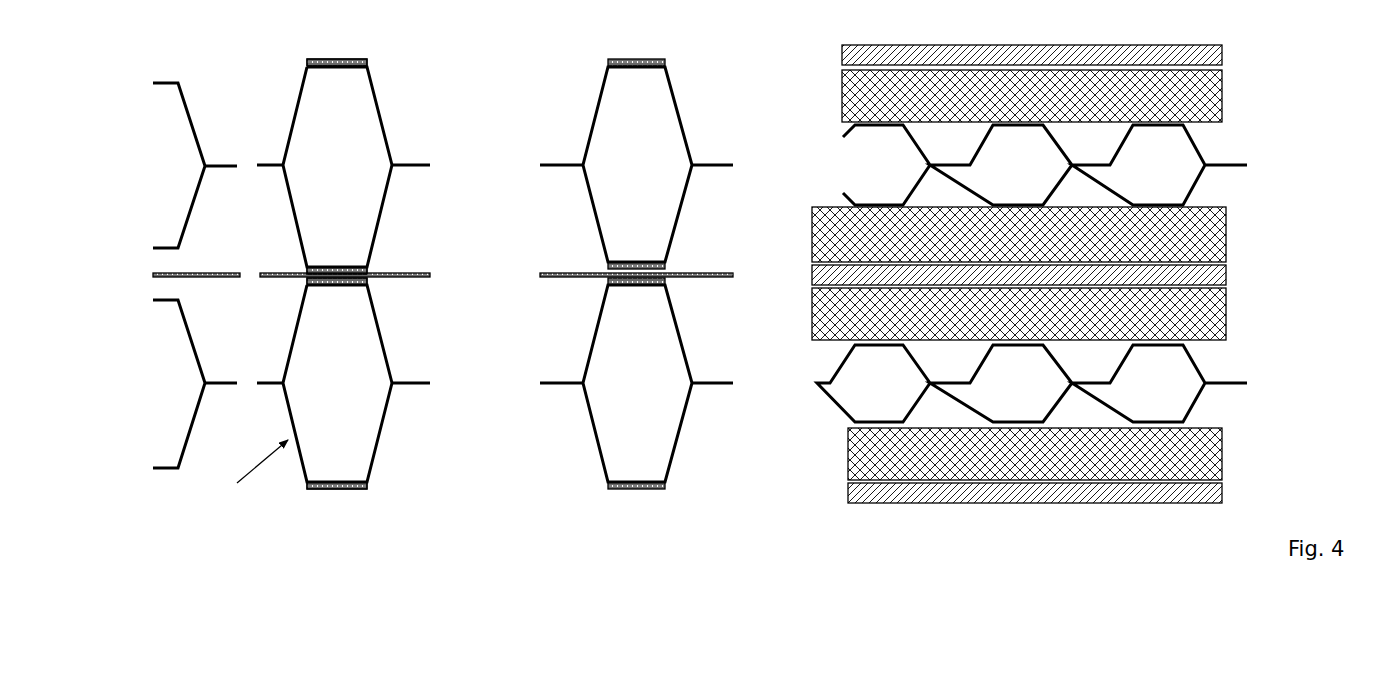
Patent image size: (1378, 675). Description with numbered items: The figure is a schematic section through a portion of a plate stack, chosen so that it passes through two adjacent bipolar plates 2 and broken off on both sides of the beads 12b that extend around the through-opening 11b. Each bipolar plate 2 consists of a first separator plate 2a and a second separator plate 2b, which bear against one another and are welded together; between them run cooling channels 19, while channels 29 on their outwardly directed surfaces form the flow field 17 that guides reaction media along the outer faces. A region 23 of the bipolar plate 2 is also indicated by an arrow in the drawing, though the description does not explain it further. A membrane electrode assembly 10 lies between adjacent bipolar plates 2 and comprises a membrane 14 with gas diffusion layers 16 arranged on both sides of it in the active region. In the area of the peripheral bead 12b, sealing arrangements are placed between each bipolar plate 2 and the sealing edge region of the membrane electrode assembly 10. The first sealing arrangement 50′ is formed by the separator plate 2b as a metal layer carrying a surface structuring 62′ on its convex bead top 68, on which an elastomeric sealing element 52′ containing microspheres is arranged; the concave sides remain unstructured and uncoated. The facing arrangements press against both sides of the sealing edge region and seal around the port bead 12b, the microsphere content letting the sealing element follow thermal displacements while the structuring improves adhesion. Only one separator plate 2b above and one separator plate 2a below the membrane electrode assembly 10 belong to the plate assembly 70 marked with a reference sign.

The bipolar plate 2 is at (152, 295).
The first separator plate 2a is at (402, 333).
The second separator plate 2b is at (437, 455).
The membrane electrode assembly 10 is at (1252, 490).
The through-opening 11b is at (496, 395).
The bead 12b is at (592, 341).
The membrane 14 is at (1178, 500).
The gas diffusion layer 16 is at (1200, 442).
The flow field 17 is at (835, 358).
The cooling channel 19 is at (1170, 396).
The cell 23 is at (252, 475).
The channel 29 is at (1103, 420).
The first sealing arrangement 50′ is at (367, 268).
The sealing element 52′ is at (665, 267).
The surface structuring 62′ is at (308, 268).
The bead top 68 is at (341, 266).
The plate assembly 70 is at (1296, 165).